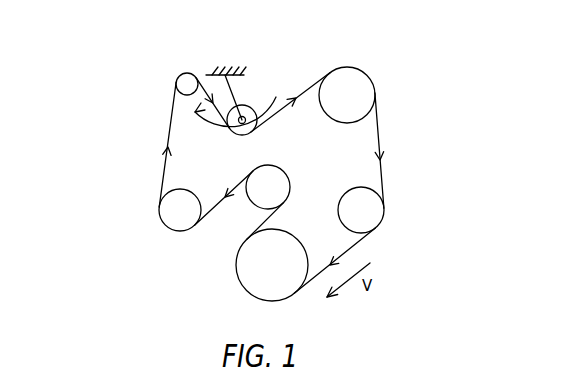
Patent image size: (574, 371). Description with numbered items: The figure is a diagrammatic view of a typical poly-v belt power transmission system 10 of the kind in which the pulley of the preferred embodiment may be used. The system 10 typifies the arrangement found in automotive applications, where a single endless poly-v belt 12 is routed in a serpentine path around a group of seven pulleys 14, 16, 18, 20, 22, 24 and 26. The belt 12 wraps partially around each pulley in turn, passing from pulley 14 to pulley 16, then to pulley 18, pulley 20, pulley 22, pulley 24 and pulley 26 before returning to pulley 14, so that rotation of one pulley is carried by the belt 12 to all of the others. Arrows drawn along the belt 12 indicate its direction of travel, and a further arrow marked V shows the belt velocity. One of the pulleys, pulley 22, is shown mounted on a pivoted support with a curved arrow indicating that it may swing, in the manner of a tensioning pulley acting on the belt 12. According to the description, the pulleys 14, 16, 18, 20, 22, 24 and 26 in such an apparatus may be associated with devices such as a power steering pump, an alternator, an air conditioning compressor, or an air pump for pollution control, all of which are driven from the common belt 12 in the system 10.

The power transmission system 10 is at (398, 158).
The poly-v belt 12 is at (378, 118).
The pulley 14 is at (238, 278).
The pulley 16 is at (285, 172).
The pulley 18 is at (158, 213).
The pulley 20 is at (183, 74).
The pulley 22 is at (238, 142).
The pulley 24 is at (357, 68).
The pulley 26 is at (385, 220).